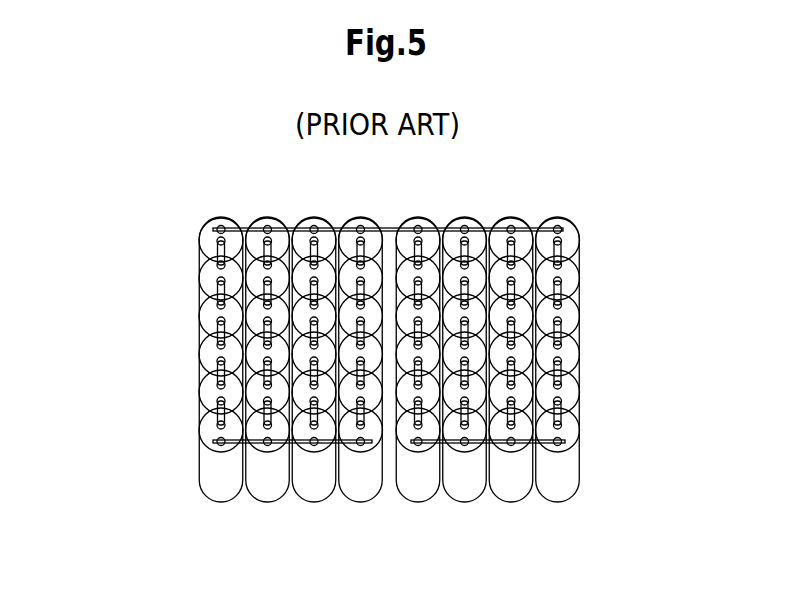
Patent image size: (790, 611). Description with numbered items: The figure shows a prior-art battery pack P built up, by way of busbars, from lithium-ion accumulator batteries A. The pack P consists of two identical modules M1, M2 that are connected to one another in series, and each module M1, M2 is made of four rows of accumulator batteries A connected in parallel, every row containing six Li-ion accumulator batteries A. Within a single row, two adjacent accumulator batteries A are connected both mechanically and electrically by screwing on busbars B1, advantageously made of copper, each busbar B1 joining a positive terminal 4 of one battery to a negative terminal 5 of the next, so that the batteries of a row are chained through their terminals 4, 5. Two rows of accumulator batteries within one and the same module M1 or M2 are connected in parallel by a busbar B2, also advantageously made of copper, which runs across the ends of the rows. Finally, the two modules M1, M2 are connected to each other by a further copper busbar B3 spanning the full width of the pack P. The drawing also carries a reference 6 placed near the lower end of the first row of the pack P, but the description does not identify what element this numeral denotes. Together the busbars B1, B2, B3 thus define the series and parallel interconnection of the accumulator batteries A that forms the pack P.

The battery pack P is at (373, 360).
The module M1 is at (267, 387).
The module M2 is at (528, 383).
The positive terminal 4 is at (582, 312).
The negative terminal 5 is at (581, 280).
The cell holder 6 is at (199, 487).
The Li-ion accumulator battery A is at (353, 503).
The busbar B1 is at (223, 373).
The busbar B2 is at (218, 447).
The busbar B3 is at (390, 228).